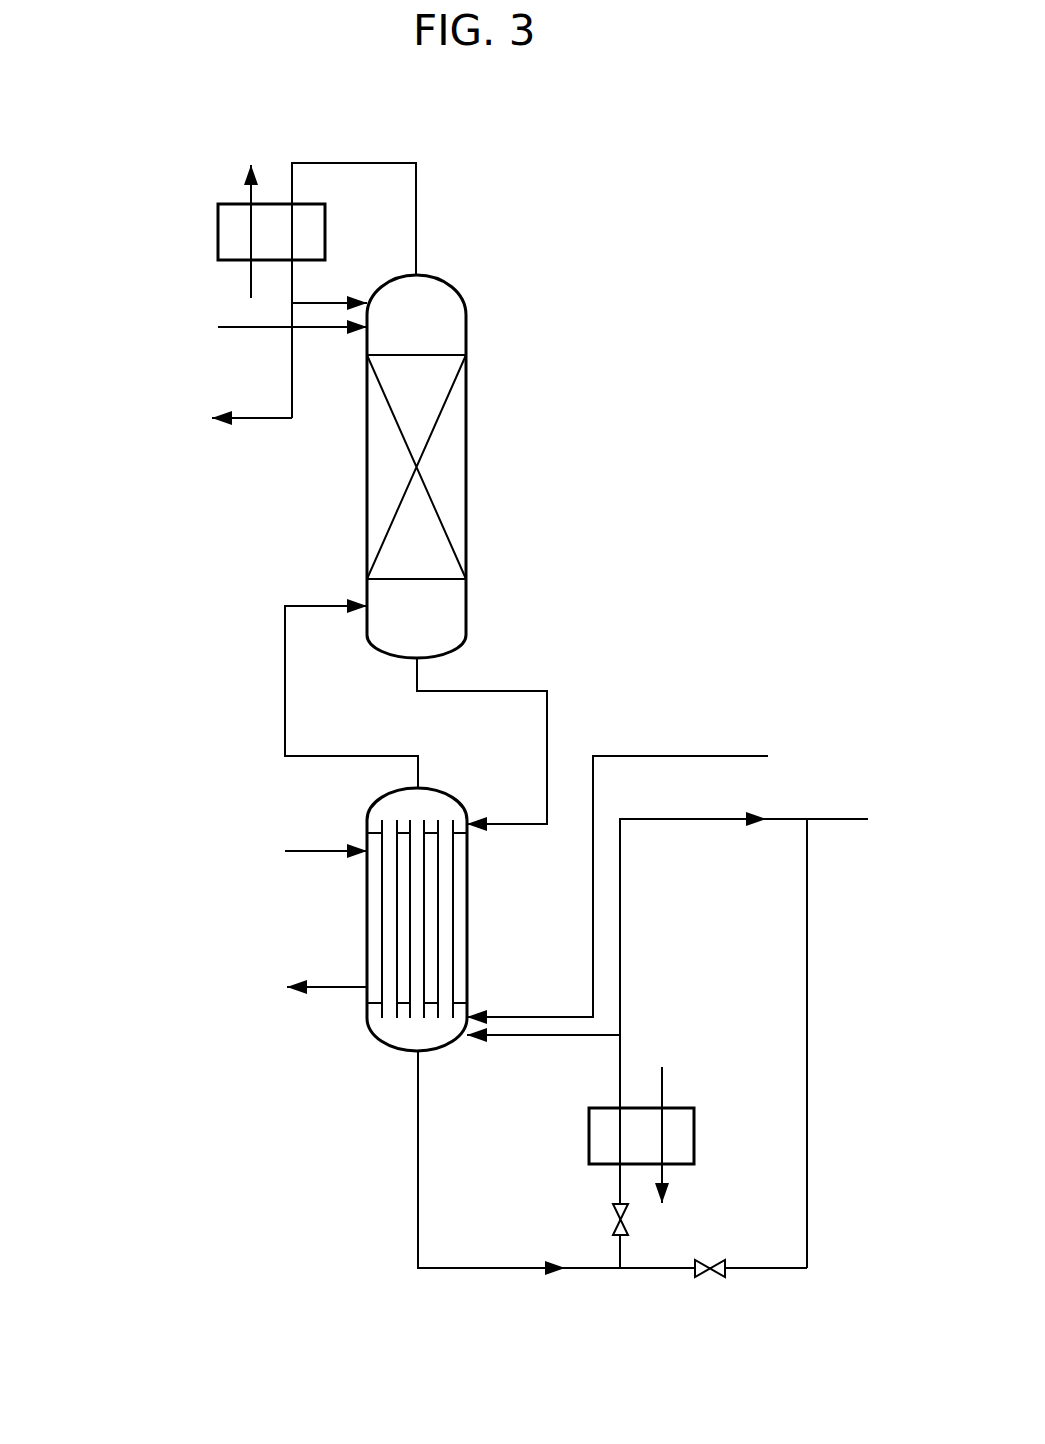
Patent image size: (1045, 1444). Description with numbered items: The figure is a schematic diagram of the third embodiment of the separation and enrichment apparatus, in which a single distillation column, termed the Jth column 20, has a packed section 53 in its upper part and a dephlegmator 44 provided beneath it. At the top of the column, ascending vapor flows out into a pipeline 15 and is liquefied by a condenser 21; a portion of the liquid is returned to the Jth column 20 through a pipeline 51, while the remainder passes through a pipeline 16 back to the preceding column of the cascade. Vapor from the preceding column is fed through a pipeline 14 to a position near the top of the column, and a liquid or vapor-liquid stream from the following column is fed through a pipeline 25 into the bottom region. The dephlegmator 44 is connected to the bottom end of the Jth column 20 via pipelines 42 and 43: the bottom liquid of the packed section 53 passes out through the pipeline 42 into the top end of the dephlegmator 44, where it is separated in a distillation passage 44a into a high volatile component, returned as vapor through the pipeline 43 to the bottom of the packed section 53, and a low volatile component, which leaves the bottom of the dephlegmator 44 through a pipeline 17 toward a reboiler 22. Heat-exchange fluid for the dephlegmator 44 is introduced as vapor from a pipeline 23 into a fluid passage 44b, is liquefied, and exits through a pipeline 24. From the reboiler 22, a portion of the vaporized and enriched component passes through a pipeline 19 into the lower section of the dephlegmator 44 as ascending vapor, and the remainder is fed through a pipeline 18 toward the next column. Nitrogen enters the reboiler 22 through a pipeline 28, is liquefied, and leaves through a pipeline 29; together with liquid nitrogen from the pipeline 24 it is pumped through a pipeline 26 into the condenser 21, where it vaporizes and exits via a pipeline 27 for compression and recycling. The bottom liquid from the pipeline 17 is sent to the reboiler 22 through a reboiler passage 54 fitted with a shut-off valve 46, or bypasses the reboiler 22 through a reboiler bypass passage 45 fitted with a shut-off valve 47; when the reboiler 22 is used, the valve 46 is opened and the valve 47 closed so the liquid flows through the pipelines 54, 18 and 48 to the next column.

The pipeline 14 is at (250, 327).
The pipeline 15 is at (416, 190).
The pipeline 16 is at (253, 420).
The pipeline 17 is at (490, 1268).
The pipeline 18 is at (663, 819).
The pipeline 19 is at (560, 1035).
The Jth column 20 is at (440, 290).
The condenser 21 is at (218, 218).
The reboiler 22 is at (694, 1128).
The pipeline 23 is at (310, 851).
The pipeline 24 is at (340, 987).
The pipeline 25 is at (593, 756).
The pipeline 26 is at (251, 280).
The pipeline 27 is at (250, 160).
The pipeline 28 is at (662, 1088).
The pipeline 29 is at (665, 1195).
The pipeline 42 is at (490, 691).
The pipeline 43 is at (285, 707).
The dephlegmator 44 is at (367, 905).
The distillation passage 44a is at (417, 895).
The fluid passage 44b is at (430, 970).
The reboiler bypass passage 45 is at (655, 1268).
The shut-off valve 46 is at (613, 1208).
The shut-off valve 47 is at (720, 1272).
The pipeline 48 is at (835, 819).
The pipeline 51 is at (305, 303).
The packed section 53 is at (453, 405).
The reboiler passage 54 is at (620, 1252).